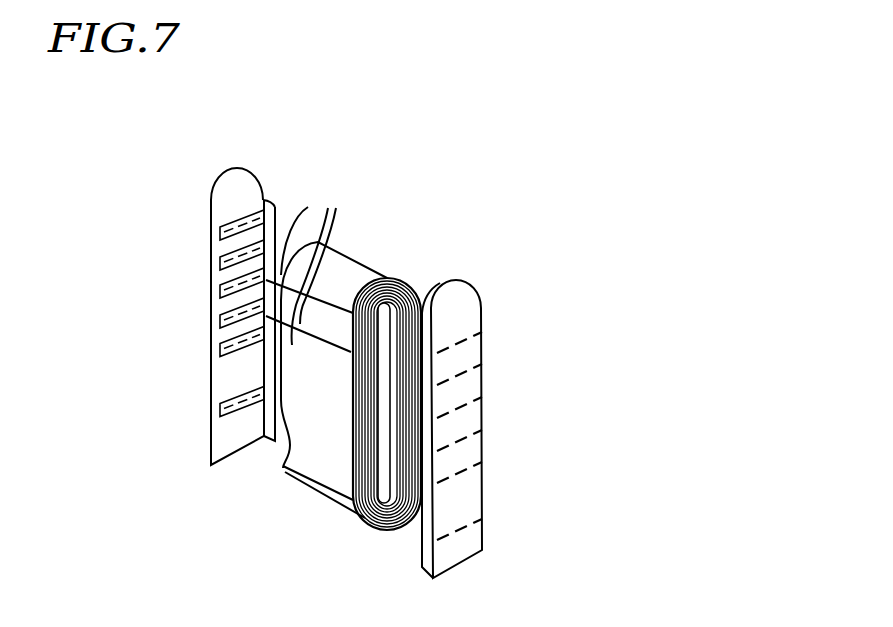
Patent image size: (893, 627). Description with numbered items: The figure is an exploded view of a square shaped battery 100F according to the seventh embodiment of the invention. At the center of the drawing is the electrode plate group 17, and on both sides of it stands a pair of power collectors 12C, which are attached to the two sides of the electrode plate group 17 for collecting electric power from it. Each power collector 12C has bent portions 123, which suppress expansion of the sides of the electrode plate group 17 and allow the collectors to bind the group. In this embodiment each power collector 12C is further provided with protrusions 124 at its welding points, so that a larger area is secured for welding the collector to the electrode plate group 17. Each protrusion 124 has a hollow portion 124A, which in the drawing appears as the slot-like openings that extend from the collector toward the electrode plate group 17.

The square shaped battery 100F is at (473, 96).
The power collector 12C is at (241, 187).
The bent portion 123 is at (272, 206).
The protrusion 124 is at (220, 286).
The hollow portion 124A is at (273, 512).
The electrode plate group 17 is at (393, 258).